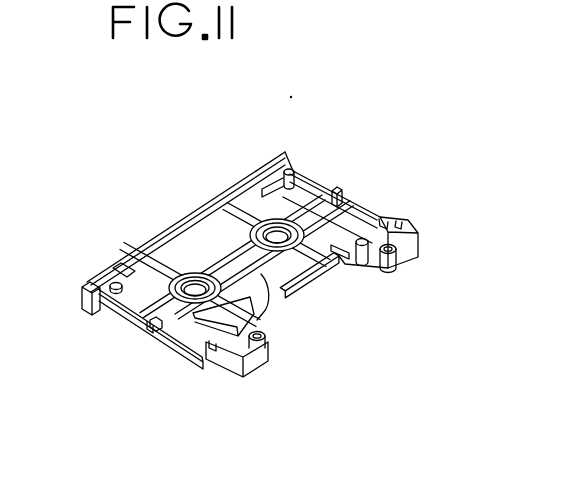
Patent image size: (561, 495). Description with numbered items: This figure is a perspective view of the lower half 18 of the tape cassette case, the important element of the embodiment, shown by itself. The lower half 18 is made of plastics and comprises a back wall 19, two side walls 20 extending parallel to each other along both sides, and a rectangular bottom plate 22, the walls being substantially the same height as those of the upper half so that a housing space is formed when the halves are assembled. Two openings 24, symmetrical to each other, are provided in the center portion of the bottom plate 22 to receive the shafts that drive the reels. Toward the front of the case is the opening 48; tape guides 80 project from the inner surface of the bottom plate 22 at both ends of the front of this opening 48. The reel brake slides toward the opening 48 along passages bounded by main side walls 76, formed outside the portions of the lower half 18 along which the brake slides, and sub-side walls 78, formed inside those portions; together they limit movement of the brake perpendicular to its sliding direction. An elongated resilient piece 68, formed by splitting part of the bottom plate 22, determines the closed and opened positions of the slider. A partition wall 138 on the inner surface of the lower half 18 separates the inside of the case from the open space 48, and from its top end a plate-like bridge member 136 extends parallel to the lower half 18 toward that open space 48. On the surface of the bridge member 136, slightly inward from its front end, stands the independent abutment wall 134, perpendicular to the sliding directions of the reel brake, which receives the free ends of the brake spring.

The lower half 18 is at (339, 188).
The back wall 19 is at (177, 233).
The side walls 20 is at (240, 273).
The bottom plate 22 is at (213, 232).
The openings 24 is at (160, 278).
The opening 48 is at (258, 272).
The resilient piece 68 is at (157, 338).
The main side walls 76 is at (395, 215).
The sub-side walls 78 is at (318, 300).
The tape guides 80 is at (397, 266).
The independent abutment wall 134 is at (327, 278).
The bridge member 136 is at (182, 275).
The partition wall 138 is at (381, 218).